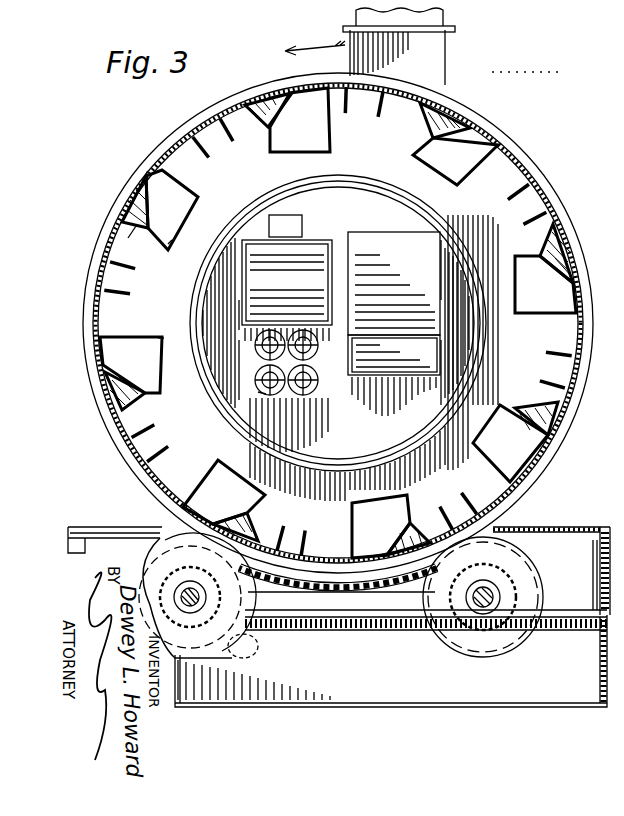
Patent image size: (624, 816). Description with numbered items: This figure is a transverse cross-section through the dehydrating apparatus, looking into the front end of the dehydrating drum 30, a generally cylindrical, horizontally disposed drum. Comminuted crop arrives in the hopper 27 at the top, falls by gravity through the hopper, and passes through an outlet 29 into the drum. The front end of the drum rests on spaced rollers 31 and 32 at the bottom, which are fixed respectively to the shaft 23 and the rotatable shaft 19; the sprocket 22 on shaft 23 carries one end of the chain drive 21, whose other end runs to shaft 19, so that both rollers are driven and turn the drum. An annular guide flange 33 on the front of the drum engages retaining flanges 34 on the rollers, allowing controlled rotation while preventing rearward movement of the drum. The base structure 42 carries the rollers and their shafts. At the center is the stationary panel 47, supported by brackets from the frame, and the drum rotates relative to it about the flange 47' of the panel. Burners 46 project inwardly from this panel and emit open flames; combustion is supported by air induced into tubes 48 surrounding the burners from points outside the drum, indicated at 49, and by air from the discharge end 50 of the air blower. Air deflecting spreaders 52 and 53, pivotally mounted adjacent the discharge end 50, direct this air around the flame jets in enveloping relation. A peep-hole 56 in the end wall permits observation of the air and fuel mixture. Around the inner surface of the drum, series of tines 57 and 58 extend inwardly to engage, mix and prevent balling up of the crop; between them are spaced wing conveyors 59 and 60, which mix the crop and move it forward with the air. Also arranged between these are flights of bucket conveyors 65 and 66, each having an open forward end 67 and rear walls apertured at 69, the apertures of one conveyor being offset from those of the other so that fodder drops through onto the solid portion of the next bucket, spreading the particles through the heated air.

The rotatable shaft 19 is at (492, 600).
The chain drive 21 is at (350, 636).
The sprocket 22 is at (243, 646).
The shaft 23 is at (200, 597).
The hopper 27 is at (442, 20).
The outlet 29 is at (398, 375).
The dehydrating drum 30 is at (527, 172).
The roller 31 is at (510, 548).
The roller 32 is at (168, 555).
The annular guide flange 33 is at (578, 414).
The retaining flanges 34 is at (540, 586).
The base 42 is at (600, 708).
The burners 46 is at (305, 396).
The stationary panel 47 is at (344, 328).
The flange 47' is at (455, 154).
The tubes 48 is at (272, 395).
The air induction points 49 is at (258, 372).
The discharge end 50 is at (333, 241).
The air deflecting spreader 52 is at (252, 260).
The air deflecting spreader 53 is at (252, 300).
The peep-hole 56 is at (292, 217).
The tines 57 is at (512, 184).
The tines 58 is at (518, 216).
The wing conveyors 59 is at (128, 404).
The wing conveyors 60 is at (130, 238).
The bucket conveyor 65 is at (162, 336).
The bucket conveyor 66 is at (190, 205).
The open forward end 67 is at (168, 244).
The apertures 69 is at (326, 134).